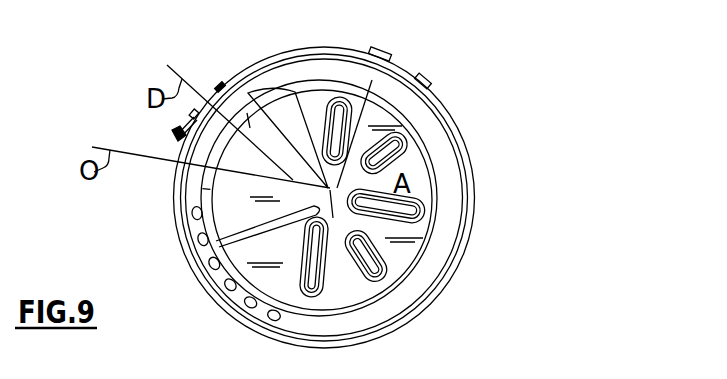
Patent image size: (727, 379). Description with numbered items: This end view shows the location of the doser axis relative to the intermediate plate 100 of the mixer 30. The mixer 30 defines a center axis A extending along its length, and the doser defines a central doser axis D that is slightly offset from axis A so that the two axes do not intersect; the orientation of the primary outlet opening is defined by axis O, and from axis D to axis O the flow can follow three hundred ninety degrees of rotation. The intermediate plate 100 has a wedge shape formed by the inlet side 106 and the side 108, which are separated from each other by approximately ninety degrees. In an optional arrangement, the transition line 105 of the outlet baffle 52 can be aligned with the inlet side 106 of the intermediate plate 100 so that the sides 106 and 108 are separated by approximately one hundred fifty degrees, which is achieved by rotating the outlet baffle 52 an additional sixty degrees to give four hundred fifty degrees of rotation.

The mixer 30 is at (517, 48).
The outlet baffle 52 is at (407, 255).
The intermediate plate 100 is at (219, 237).
The transition line 105 is at (390, 117).
The inlet side 106 is at (299, 94).
The side 108 is at (227, 298).